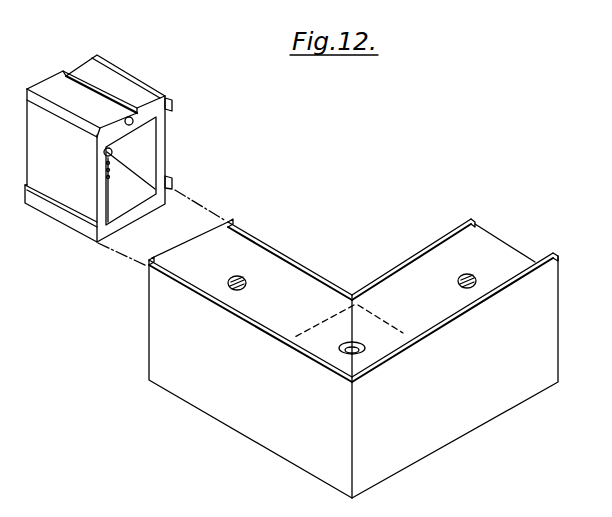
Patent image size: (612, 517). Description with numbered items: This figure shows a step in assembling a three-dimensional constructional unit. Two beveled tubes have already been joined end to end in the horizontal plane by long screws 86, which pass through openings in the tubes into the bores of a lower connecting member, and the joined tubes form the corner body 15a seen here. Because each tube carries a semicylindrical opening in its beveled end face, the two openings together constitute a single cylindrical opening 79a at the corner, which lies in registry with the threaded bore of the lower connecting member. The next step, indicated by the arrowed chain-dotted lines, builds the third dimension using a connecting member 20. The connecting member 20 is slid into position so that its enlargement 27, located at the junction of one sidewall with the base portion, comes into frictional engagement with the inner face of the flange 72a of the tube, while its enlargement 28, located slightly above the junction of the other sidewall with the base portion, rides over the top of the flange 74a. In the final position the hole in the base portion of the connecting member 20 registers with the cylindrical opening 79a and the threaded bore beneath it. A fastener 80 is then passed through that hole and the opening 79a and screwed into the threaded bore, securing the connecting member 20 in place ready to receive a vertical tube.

The connecting member 20 is at (118, 162).
The enlargement 27 is at (65, 222).
The enlargement 28 is at (173, 180).
The fastener 80 is at (112, 153).
The frame corner member 15a is at (353, 358).
The flange 72a is at (272, 330).
The flange 74a is at (312, 266).
The cylindrical opening 79a is at (363, 346).
The long screw 86 is at (237, 291).